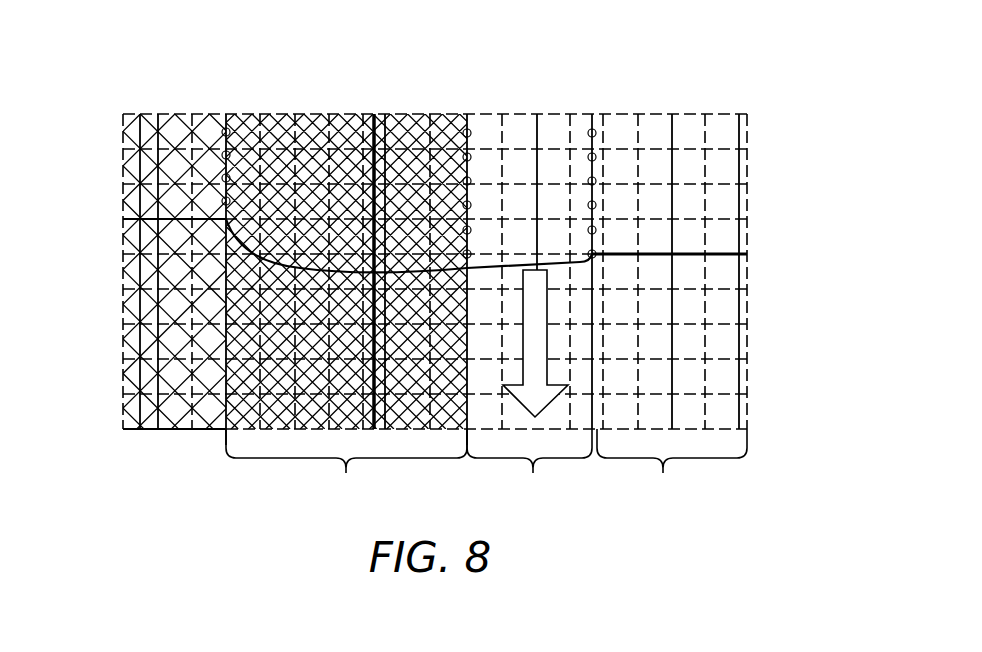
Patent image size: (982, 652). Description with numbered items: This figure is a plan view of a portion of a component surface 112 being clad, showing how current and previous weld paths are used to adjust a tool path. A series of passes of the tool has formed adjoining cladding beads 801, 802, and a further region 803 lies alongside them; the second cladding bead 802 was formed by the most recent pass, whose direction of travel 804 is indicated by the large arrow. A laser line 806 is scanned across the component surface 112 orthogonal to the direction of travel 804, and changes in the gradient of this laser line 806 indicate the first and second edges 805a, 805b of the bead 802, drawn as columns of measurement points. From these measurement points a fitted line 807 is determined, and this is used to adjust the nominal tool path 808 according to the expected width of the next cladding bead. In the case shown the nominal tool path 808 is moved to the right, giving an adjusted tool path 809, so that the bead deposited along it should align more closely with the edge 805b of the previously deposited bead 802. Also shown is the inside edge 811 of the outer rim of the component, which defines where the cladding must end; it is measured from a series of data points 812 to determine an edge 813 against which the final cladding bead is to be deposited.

The component surface 112 is at (315, 127).
The cladding bead 801 is at (672, 309).
The second cladding bead 802 is at (529, 309).
The third region 803 is at (346, 309).
The direction of travel 804 is at (548, 340).
The first edge 805a is at (594, 127).
The second edge 805b is at (471, 129).
The laser line 806 is at (488, 257).
The fitted line 807 is at (471, 114).
The nominal tool path 808 is at (372, 111).
The adjusted tool path 809 is at (389, 113).
The inside edge 811 is at (224, 194).
The data points 812 is at (226, 128).
The edge 813 is at (224, 112).